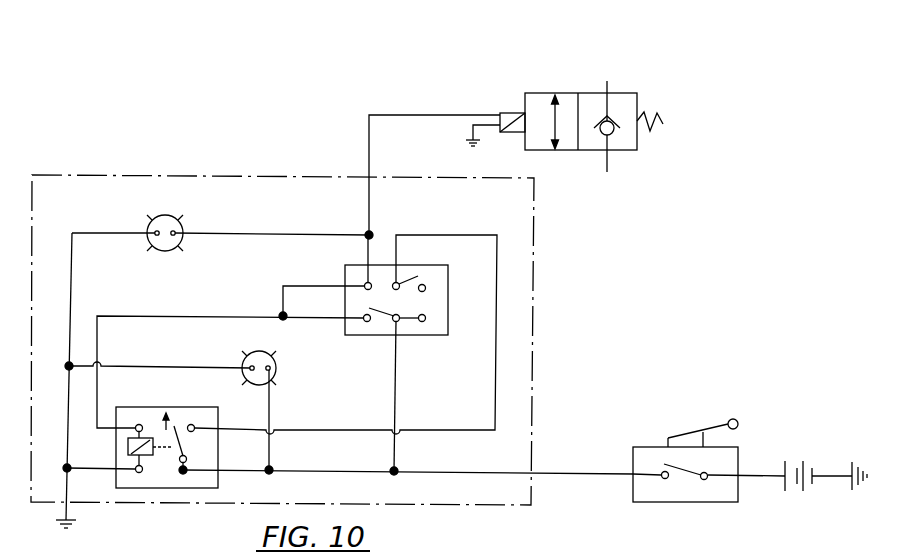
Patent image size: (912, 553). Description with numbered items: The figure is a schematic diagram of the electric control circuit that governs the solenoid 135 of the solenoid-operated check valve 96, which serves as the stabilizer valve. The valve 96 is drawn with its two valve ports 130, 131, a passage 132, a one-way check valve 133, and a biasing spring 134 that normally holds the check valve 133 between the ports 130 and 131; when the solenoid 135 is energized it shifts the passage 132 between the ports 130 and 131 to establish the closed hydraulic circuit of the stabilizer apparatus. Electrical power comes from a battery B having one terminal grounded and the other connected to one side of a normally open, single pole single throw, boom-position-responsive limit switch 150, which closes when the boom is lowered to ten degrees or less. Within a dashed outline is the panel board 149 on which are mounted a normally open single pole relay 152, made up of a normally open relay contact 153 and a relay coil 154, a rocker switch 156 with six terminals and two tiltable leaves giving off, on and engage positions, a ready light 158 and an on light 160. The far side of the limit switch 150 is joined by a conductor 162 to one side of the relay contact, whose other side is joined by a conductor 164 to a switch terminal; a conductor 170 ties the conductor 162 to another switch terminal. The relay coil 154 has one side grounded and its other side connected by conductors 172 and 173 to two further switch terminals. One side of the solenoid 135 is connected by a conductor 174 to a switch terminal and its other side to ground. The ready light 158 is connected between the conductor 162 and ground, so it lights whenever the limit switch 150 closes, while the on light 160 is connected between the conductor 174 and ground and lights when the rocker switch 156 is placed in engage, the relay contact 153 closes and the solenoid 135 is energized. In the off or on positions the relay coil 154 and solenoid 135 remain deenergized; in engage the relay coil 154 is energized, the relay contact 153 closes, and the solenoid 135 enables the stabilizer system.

The solenoid-operated check valve 96 is at (617, 103).
The valve port 130 is at (612, 156).
The valve port 131 is at (614, 89).
The passage 132 is at (549, 121).
The one-way check valve 133 is at (617, 122).
The biasing spring 134 is at (666, 126).
The solenoid 135 is at (508, 112).
The panel board 149 is at (535, 322).
The limit switch 150 is at (742, 450).
The relay 152 is at (165, 456).
The relay contact 153 is at (190, 447).
The relay coil 154 is at (146, 458).
The rocker switch 156 is at (470, 262).
The ready light 158 is at (277, 373).
The on light 160 is at (160, 214).
The conductor 162 is at (566, 472).
The conductor 164 is at (498, 270).
The conductor 170 is at (398, 390).
The conductor 172 is at (170, 314).
The conductor 173 is at (306, 284).
The conductor 174 is at (367, 133).
The battery B is at (826, 440).